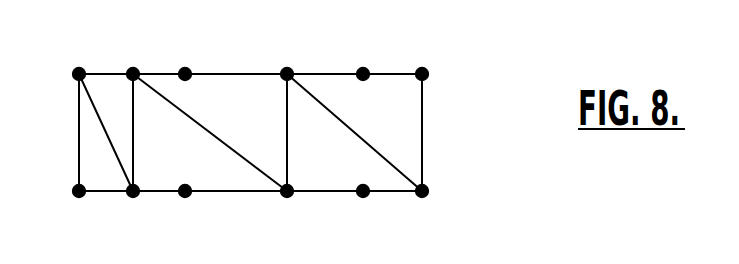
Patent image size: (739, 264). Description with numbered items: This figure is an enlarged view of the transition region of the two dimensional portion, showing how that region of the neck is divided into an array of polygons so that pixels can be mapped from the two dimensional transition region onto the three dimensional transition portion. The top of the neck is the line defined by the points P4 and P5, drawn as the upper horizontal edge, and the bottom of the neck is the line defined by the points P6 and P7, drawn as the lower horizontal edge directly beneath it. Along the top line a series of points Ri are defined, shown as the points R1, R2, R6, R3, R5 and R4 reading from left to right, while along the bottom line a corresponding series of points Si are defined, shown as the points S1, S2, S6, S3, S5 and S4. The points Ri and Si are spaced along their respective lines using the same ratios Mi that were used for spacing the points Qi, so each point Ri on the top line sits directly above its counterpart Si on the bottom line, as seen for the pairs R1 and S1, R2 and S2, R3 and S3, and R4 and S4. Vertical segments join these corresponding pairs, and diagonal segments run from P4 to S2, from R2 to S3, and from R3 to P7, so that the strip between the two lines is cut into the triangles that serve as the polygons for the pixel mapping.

The point R1 is at (76, 57).
The point R2 is at (130, 57).
The point R3 is at (295, 57).
The point R4 is at (416, 57).
The point R5 is at (361, 57).
The point R6 is at (184, 57).
The point S1 is at (75, 212).
The point S2 is at (129, 212).
The point S3 is at (294, 212).
The point S4 is at (416, 212).
The point S5 is at (361, 212).
The point S6 is at (182, 212).
The point P4 is at (87, 77).
The point P5 is at (411, 77).
The point P6 is at (87, 191).
The point P7 is at (411, 194).